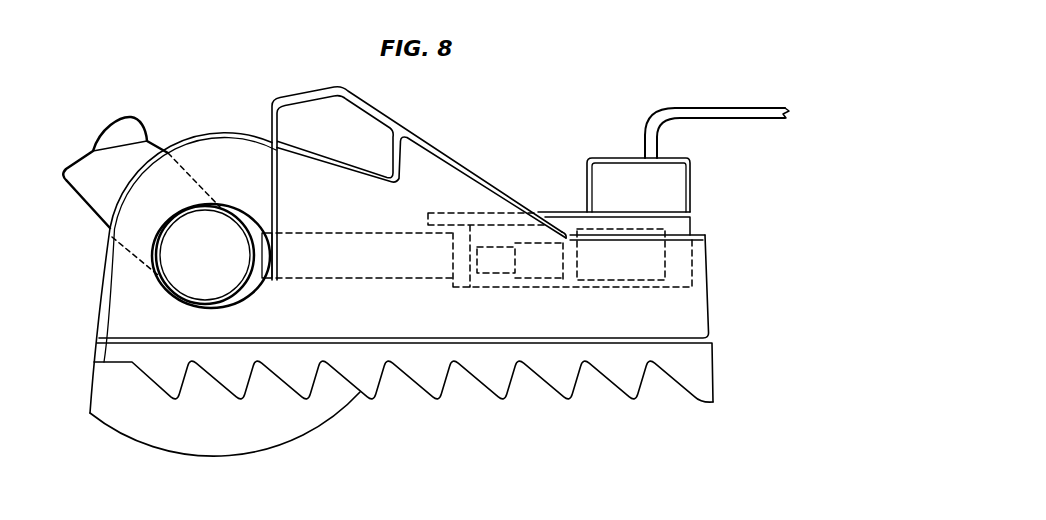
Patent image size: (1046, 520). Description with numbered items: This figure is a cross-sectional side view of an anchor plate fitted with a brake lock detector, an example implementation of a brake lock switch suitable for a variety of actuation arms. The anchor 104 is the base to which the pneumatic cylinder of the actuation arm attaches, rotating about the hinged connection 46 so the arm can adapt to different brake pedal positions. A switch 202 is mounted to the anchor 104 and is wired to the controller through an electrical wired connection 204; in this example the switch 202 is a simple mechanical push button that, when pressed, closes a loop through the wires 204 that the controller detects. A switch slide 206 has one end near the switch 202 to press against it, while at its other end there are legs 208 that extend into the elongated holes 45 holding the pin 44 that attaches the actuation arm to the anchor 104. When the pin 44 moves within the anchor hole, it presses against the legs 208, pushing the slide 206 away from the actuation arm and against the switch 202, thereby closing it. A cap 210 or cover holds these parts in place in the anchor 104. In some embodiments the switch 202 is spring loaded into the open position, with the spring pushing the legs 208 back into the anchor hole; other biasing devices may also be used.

The pin 44 is at (193, 270).
The elongated holes 45 is at (253, 227).
The hinged connection 46 is at (147, 142).
The anchor 104 is at (102, 280).
The switch 202 is at (623, 263).
The electrical wired connection 204 is at (740, 104).
The switch slide 206 is at (500, 288).
The legs 208 is at (350, 277).
The cap 210 is at (567, 211).